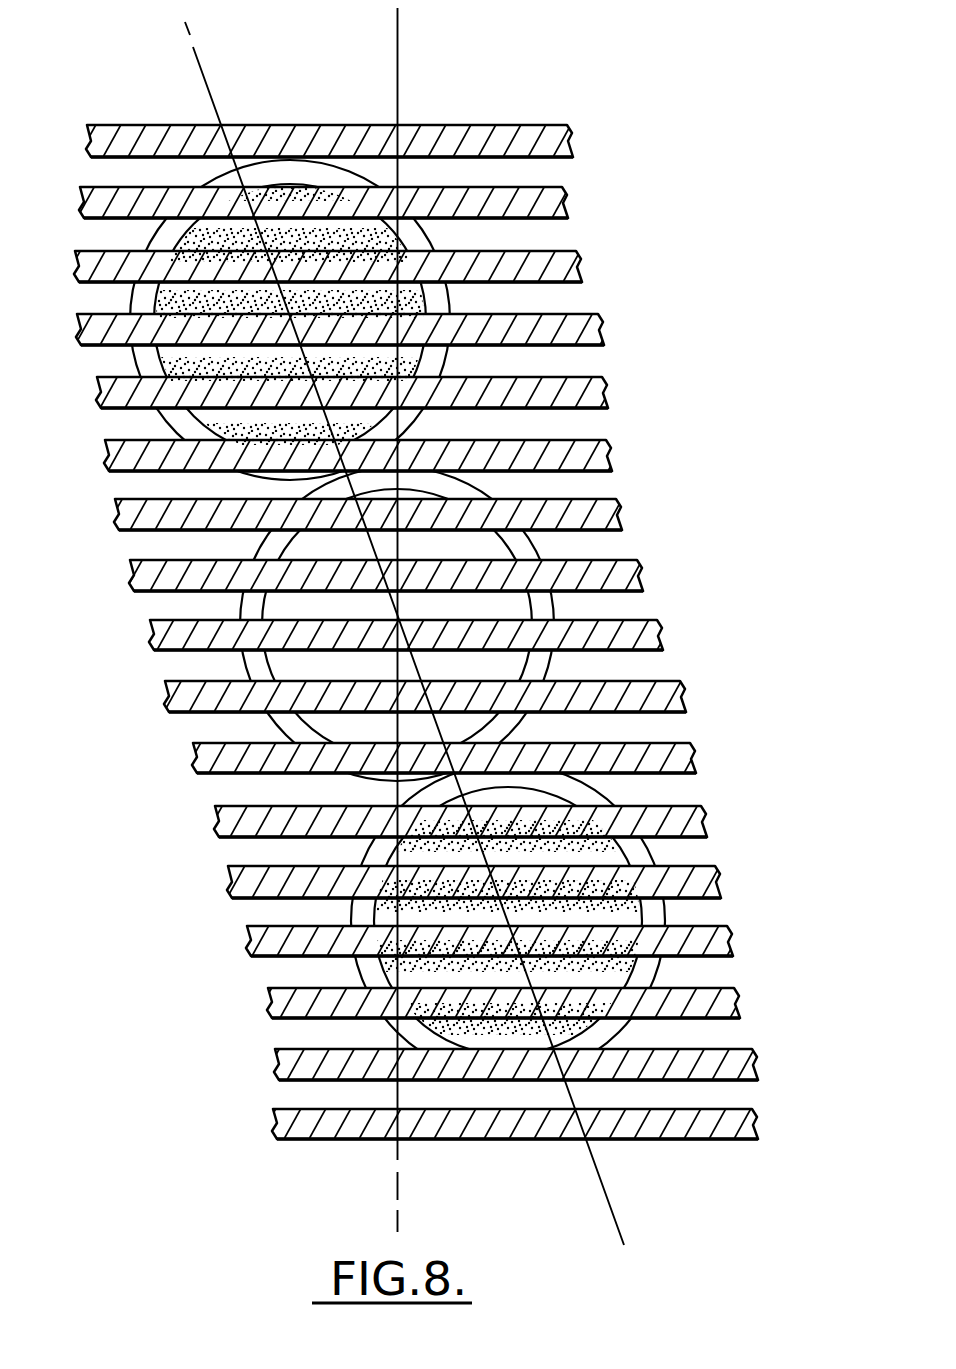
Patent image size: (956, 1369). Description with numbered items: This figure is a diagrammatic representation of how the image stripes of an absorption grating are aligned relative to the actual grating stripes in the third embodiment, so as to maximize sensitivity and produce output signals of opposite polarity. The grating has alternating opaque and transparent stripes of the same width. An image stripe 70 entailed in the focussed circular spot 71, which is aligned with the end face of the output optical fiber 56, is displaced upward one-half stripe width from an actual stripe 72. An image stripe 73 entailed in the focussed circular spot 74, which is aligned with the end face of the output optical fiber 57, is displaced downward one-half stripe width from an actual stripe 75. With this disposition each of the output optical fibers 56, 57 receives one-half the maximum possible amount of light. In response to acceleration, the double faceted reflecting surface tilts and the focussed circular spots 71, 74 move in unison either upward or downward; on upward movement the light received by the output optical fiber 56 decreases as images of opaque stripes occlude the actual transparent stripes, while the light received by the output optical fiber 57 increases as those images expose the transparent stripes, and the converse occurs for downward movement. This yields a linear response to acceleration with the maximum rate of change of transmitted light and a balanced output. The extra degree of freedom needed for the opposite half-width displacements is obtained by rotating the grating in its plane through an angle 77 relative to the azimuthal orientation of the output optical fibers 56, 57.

The output optical fiber 56 is at (449, 291).
The output optical fiber 57 is at (664, 910).
The image stripe 70 is at (160, 296).
The focussed circular spot 71 is at (172, 349).
The actual stripe 72 is at (601, 330).
The image stripe 73 is at (372, 972).
The focussed circular spot 74 is at (605, 855).
The actual stripe 75 is at (247, 941).
The angle 77 is at (390, 43).